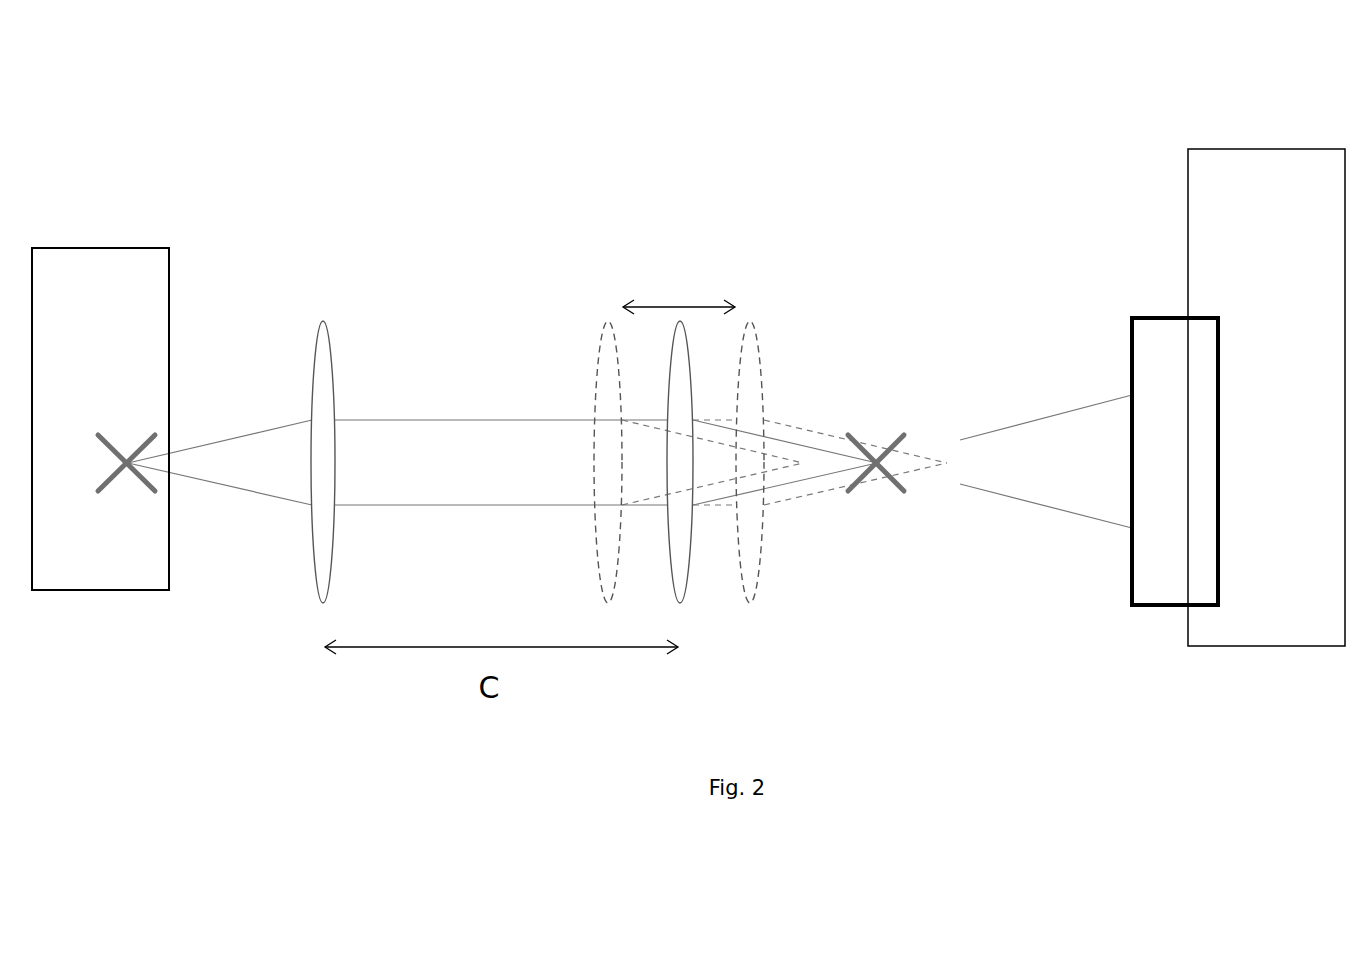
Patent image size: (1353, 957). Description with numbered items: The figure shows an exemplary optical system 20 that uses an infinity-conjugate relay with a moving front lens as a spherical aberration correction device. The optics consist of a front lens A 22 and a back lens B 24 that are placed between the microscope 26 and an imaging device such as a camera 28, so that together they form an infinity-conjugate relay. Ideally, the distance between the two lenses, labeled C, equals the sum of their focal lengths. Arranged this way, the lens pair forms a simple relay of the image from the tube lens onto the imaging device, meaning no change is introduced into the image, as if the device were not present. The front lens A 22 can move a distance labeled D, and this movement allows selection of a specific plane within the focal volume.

The optical system 20 is at (910, 183).
The front lens A 22 is at (682, 573).
The back lens B 24 is at (335, 352).
The microscope 26 is at (1189, 145).
The camera 28 is at (143, 280).